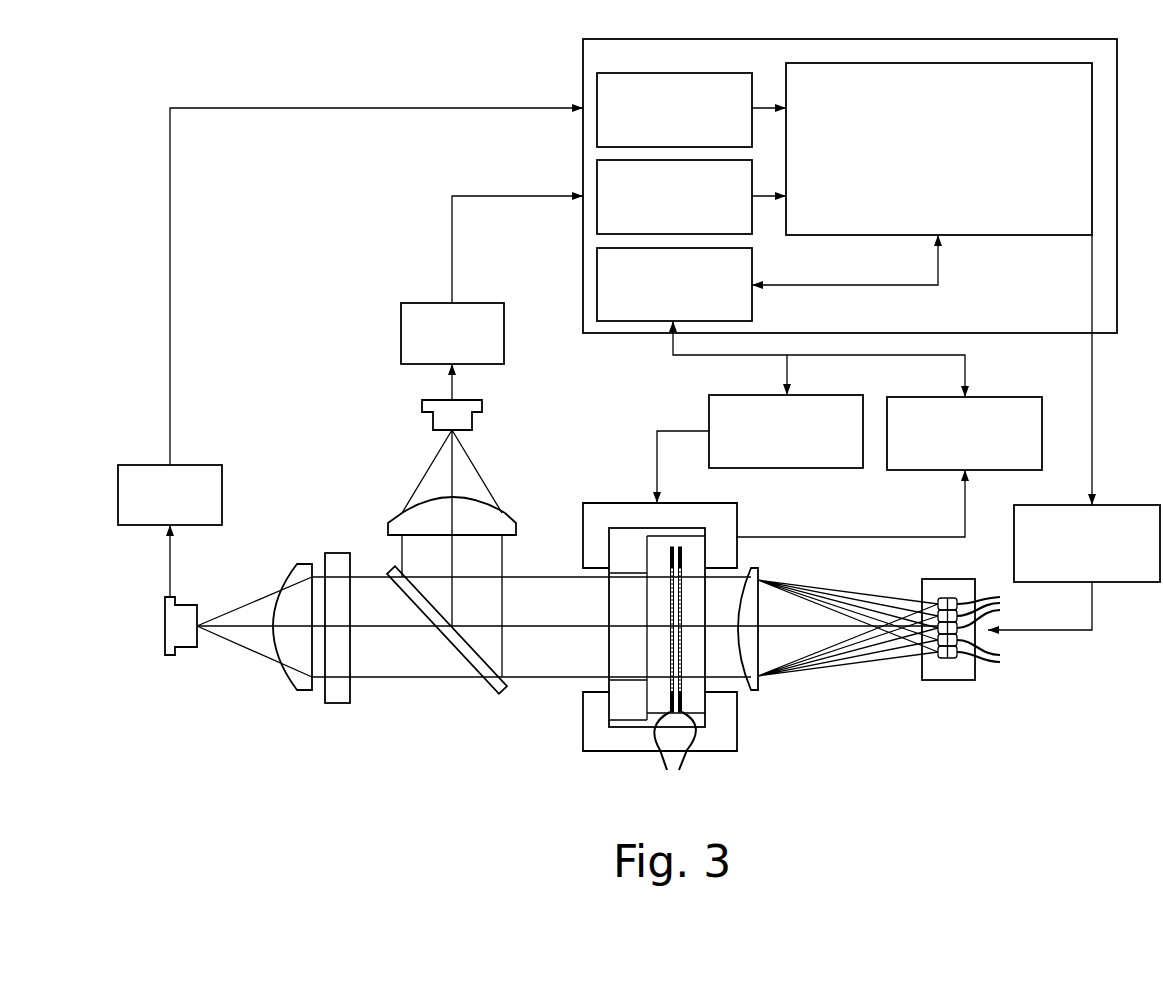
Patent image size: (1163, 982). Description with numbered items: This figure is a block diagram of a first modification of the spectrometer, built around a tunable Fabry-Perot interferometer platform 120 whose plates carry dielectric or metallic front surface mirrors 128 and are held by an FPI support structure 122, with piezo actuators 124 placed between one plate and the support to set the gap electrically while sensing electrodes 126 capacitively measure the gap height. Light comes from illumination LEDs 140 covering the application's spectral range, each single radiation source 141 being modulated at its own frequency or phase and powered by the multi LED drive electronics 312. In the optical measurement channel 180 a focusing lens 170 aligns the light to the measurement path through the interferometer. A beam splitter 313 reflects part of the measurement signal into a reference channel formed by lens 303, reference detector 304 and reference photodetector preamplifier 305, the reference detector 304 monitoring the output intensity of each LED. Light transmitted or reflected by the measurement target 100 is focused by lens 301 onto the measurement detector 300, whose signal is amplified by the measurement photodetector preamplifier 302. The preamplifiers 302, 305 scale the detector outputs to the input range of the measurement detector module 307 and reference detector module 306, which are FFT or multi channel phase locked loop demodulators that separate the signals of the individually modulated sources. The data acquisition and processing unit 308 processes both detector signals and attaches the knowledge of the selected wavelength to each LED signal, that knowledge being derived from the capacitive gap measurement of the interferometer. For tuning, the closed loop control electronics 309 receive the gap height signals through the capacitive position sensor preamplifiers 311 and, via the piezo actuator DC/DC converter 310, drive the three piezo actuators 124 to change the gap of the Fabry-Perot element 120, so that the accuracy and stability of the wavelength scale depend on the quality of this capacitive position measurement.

The measurement target 100 is at (330, 688).
The Fabry-Perot interferometer platform 120 is at (626, 490).
The FPI support structure 122 is at (583, 723).
The piezo actuator 124 is at (620, 703).
The sensing electrodes 126 is at (675, 756).
The front surface mirrors 128 is at (674, 657).
The illumination LEDs 140 is at (985, 692).
The single radiation source 141 is at (994, 634).
The focusing lens 170 is at (742, 682).
The optical measurement channel 180 is at (792, 624).
The measurement detector 300 is at (172, 634).
The lens 301 is at (285, 650).
The measurement photodetector preamplifier 302 is at (188, 510).
The lens 303 is at (417, 518).
The reference detector 304 is at (445, 425).
The reference photodetector preamplifier 305 is at (470, 347).
The reference detector FFT or multi channel phase locked loop module 306 is at (691, 213).
The measurement detector FFT or multi channel phase locked loop module 307 is at (691, 128).
The data acquisition and processing unit 308 is at (948, 167).
The closed loop control electronics 309 is at (691, 298).
The piezo actuator DC/DC converter 310 is at (805, 445).
The capacitive position sensor preamplifiers 311 is at (983, 447).
The multi LED drive electronics 312 is at (1110, 558).
The beam splitter 313 is at (418, 608).